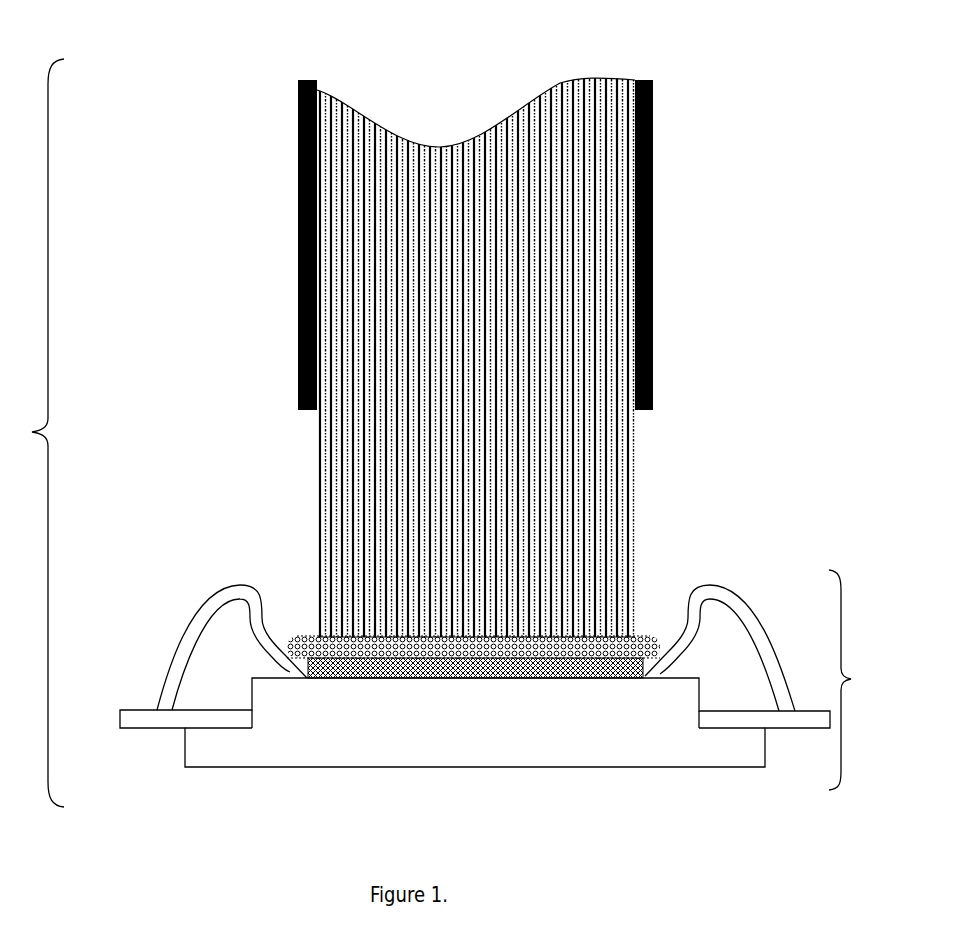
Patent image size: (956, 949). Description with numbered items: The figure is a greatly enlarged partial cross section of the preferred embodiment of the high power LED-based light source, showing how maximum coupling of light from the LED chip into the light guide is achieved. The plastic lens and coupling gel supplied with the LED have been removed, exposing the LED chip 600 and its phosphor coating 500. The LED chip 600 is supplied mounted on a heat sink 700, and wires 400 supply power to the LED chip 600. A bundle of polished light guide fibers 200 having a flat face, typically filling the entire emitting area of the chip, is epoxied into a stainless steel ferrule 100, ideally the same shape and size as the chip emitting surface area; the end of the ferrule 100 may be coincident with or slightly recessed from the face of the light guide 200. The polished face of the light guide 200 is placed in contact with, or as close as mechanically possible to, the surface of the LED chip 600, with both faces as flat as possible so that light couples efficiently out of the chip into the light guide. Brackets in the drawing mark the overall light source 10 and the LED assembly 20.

The light emitting device 10 is at (32, 433).
The base assembly 20 is at (851, 680).
The stainless steel ferrule 100 is at (652, 195).
The light guide fibers 200 is at (400, 187).
The wires 400 is at (182, 623).
The phosphor coating 500 is at (303, 633).
The LED chip 600 is at (603, 681).
The heat sink 700 is at (293, 766).